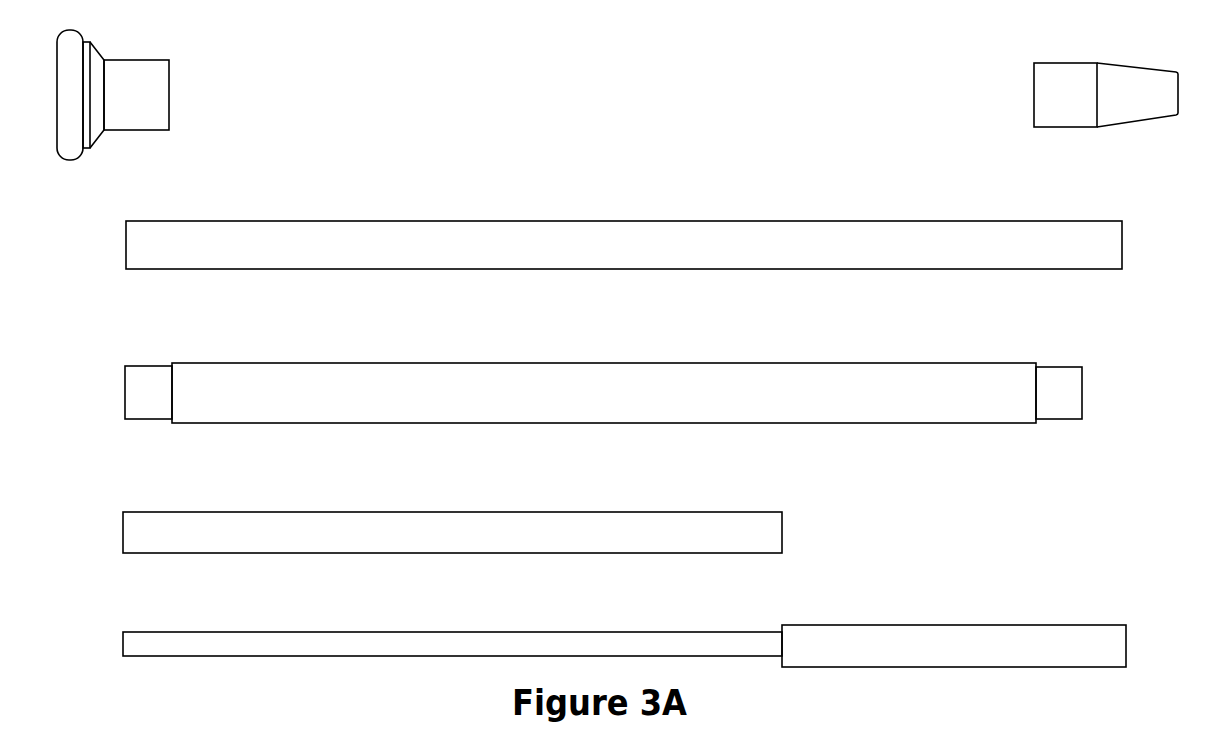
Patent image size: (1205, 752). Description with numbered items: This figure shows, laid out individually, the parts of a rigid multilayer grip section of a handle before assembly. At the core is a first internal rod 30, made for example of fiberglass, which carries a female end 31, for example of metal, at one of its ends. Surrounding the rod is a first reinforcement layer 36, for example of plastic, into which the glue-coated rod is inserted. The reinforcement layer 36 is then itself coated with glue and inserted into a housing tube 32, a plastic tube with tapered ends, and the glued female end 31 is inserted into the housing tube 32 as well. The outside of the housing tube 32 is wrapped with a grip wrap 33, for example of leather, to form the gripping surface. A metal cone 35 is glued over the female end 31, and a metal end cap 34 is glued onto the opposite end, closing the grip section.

The first internal rod 30 is at (428, 618).
The female end 31 is at (897, 625).
The housing tube 32 is at (433, 355).
The grip wrap 33 is at (441, 221).
The end cap 34 is at (172, 100).
The cone 35 is at (1036, 105).
The first reinforcement layer 36 is at (435, 510).